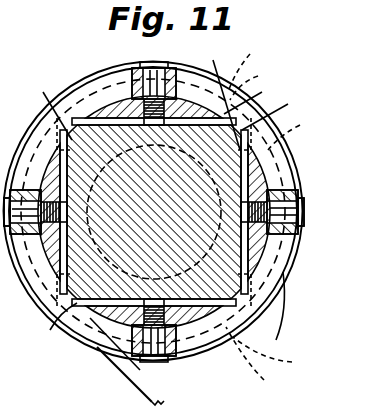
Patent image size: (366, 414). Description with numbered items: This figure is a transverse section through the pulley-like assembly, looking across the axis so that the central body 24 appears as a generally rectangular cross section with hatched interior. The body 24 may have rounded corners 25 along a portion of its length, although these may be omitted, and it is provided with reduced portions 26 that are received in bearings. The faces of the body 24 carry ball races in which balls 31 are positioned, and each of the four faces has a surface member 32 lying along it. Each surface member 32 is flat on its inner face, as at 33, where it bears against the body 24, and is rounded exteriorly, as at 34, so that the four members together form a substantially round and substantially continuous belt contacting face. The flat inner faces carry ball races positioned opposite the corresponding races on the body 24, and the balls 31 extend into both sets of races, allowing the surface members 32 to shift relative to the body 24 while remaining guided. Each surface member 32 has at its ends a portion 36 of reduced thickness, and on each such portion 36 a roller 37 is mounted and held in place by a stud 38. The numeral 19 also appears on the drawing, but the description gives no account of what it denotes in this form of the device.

The bolt end nut 19 is at (303, 205).
The central body 24 is at (96, 118).
The rounded corners 25 is at (52, 354).
The reduced portions 26 is at (34, 140).
The balls 31 is at (262, 217).
The surface member 32 is at (32, 118).
The flat inner face 33 is at (92, 393).
The rounded exterior 34 is at (145, 206).
The portion of reduced thickness 36 is at (109, 78).
The roller 37 is at (192, 60).
The stud 38 is at (148, 64).